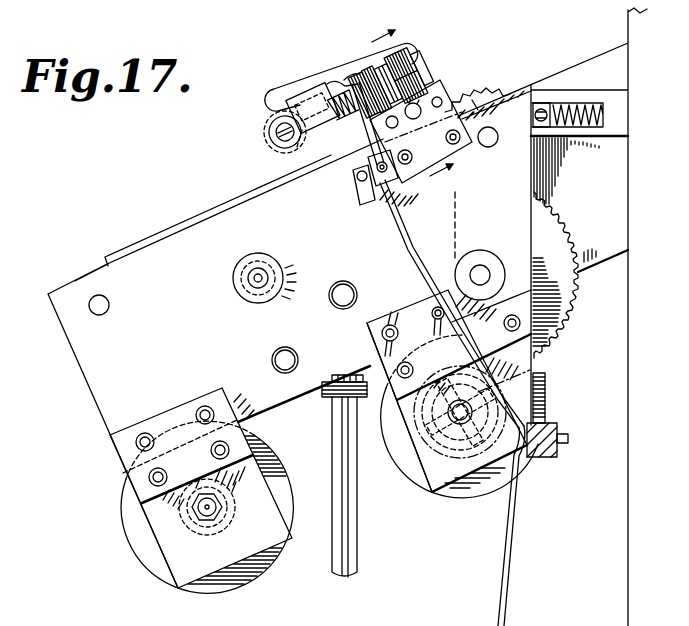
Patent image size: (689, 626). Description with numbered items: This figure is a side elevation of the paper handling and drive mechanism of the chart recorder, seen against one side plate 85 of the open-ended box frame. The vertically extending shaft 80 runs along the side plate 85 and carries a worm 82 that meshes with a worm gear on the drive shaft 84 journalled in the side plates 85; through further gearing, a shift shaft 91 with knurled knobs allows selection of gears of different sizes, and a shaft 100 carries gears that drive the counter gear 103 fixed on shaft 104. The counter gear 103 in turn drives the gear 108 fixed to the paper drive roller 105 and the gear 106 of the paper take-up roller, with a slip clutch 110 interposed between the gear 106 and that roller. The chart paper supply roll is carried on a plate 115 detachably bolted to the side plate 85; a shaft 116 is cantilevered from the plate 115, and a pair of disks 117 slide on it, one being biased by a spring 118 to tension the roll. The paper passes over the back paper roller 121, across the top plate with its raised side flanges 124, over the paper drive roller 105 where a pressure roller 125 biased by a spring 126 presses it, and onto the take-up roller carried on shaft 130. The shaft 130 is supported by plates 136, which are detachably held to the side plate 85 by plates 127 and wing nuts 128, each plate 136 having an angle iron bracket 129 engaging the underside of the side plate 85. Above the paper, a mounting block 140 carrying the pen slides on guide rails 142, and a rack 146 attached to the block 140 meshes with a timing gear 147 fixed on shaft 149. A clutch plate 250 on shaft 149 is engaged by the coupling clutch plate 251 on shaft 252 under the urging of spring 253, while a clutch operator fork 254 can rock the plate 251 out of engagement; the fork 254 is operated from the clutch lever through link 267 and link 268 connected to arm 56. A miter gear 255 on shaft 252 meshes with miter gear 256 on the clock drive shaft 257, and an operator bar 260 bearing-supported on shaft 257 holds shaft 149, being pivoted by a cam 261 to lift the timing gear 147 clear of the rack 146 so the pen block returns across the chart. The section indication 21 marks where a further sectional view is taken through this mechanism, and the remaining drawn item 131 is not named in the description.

The section line 21- 21 is at (413, 137).
The arm 56 is at (547, 458).
The shaft 80 is at (357, 487).
The worm 82 is at (330, 405).
The drive shaft 84 is at (275, 357).
The side plate 85 is at (100, 378).
The shift shaft 91 is at (268, 282).
The shaft 100 is at (347, 286).
The counter gear 103 is at (558, 238).
The shaft 104 is at (481, 265).
The paper drive roller 105 is at (488, 148).
The gear 106 is at (440, 450).
The gear 108 is at (484, 80).
The slip clutch 110 is at (437, 409).
The plate 115 is at (223, 562).
The shaft 116 is at (225, 513).
The disk 117 is at (127, 518).
The spring 118 is at (197, 534).
The back paper roller 121 is at (110, 306).
The raised side flange 124 is at (160, 237).
The pressure roller 125 is at (543, 101).
The spring 126 is at (575, 124).
The plate 127 is at (370, 325).
The wing nut 128 is at (436, 310).
The angle iron bracket 129 is at (372, 362).
The shaft 130 is at (515, 373).
The wheel 131 is at (472, 499).
The plate 136 is at (540, 392).
The mounting block 140 is at (418, 103).
The guide rail 142 is at (447, 95).
The rack 146 is at (415, 126).
The timing gear 147 is at (407, 52).
The shaft 149 is at (377, 62).
The clutch plate 250 is at (362, 70).
The coupling clutch plate 251 is at (346, 86).
The shaft 252 is at (338, 135).
The spring 253 is at (327, 84).
The clutch operator fork 254 is at (367, 142).
The miter gear 255 is at (297, 148).
The miter gear 256 is at (264, 128).
The clock drive shaft 257 is at (277, 136).
The operator bar 260 is at (273, 105).
The cam 261 is at (344, 80).
The link 267 is at (406, 240).
The link 268 is at (517, 562).